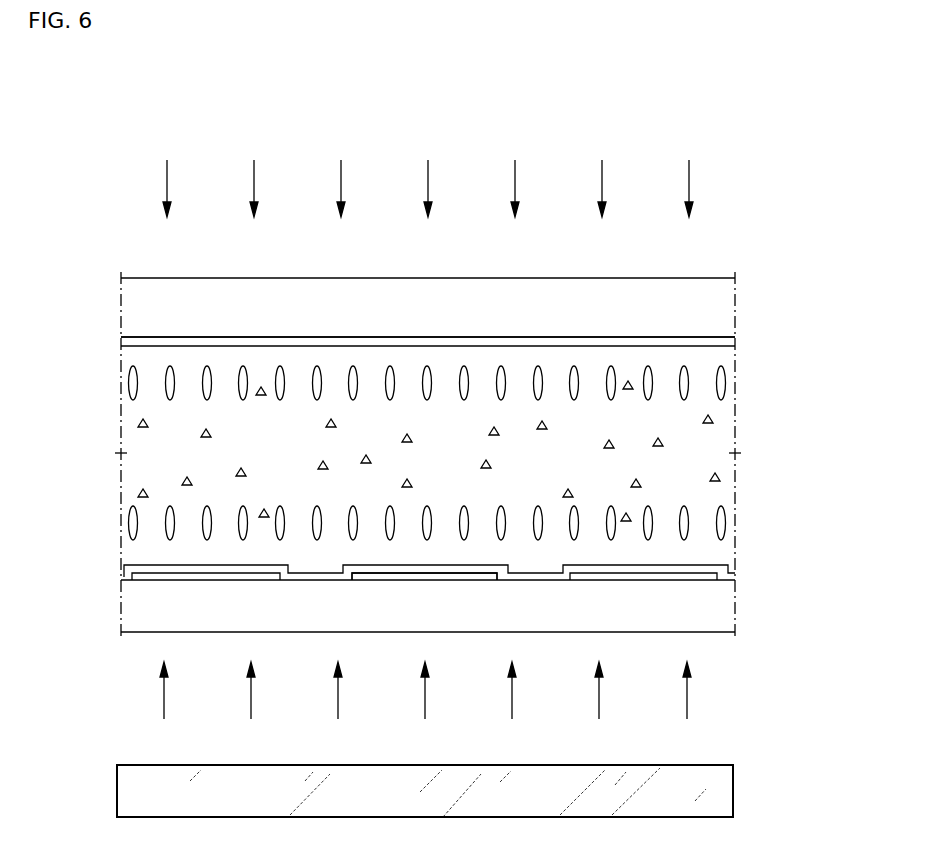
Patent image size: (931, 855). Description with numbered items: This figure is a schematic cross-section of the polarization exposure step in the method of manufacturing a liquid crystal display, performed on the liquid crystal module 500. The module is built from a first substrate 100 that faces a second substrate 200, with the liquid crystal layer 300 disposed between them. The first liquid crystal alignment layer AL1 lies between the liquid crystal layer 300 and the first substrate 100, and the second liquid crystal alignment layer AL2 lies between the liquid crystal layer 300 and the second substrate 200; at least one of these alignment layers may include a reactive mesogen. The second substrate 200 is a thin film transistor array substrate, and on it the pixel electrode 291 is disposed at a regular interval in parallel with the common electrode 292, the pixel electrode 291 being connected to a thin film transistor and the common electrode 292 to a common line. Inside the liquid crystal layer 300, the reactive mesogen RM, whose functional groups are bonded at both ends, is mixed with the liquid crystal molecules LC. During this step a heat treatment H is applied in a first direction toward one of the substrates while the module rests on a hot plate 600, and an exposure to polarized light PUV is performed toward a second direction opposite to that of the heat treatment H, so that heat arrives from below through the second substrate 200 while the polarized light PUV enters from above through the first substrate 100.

The display panel 500 is at (465, 86).
The first substrate 100 is at (121, 302).
The first liquid crystal alignment layer AL1 is at (121, 344).
The liquid crystal layer 300 is at (420, 390).
The liquid crystal molecules LC is at (130, 385).
The reactive mesogen RM is at (629, 382).
The second liquid crystal alignment layer AL2 is at (124, 577).
The pixel electrode 291 is at (148, 580).
The common electrode 292 is at (482, 578).
The second substrate 200 is at (121, 624).
The polarized light PUV is at (428, 171).
The heat treatment H is at (425, 708).
The hot plate 600 is at (117, 790).